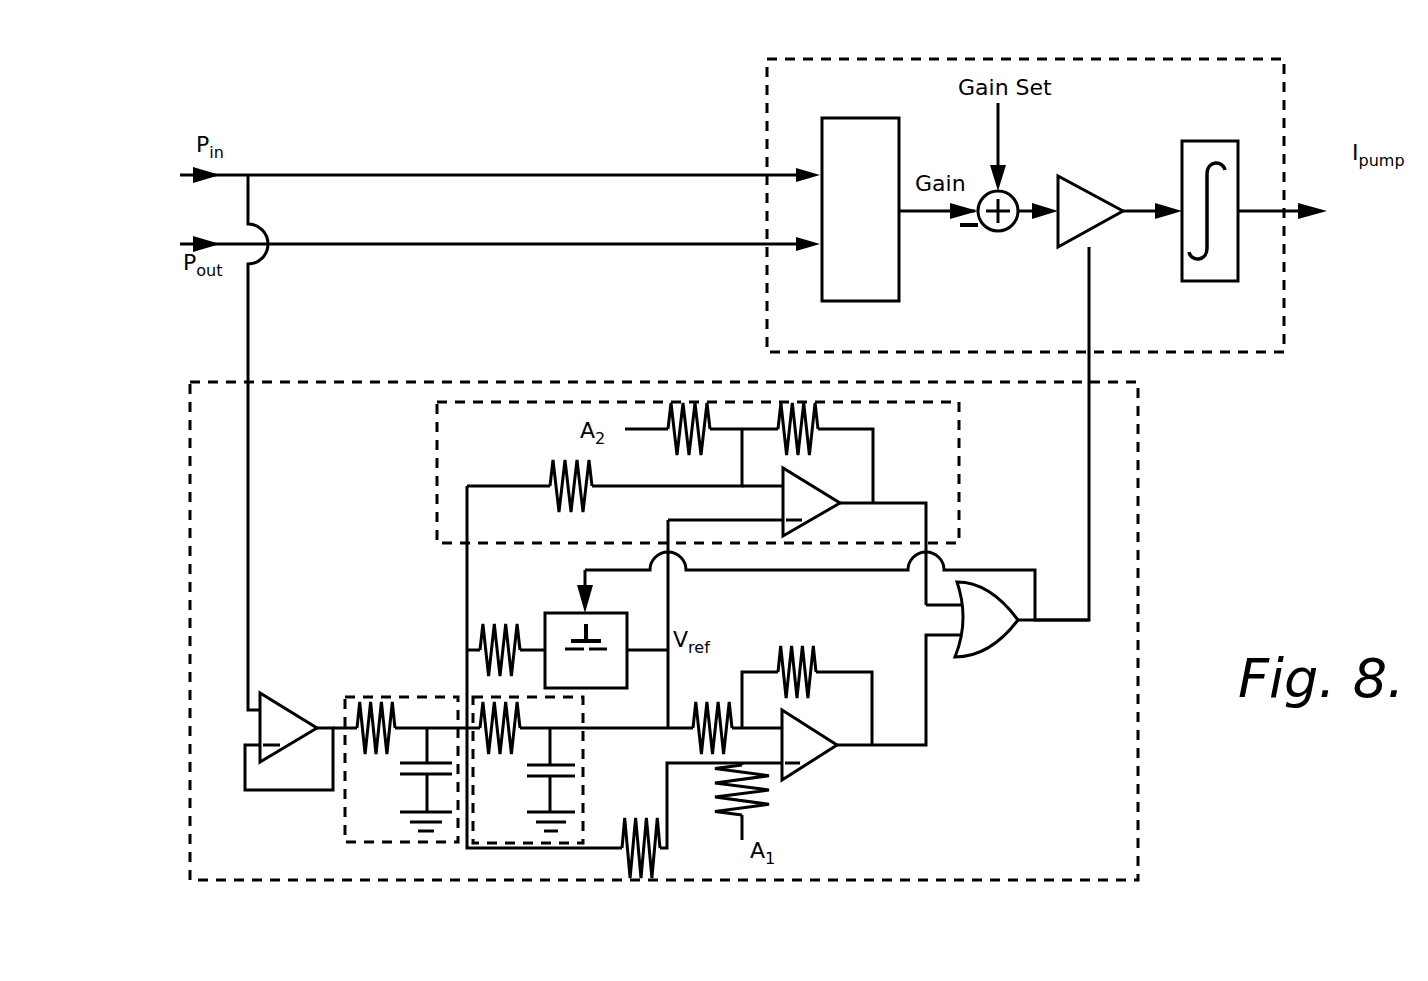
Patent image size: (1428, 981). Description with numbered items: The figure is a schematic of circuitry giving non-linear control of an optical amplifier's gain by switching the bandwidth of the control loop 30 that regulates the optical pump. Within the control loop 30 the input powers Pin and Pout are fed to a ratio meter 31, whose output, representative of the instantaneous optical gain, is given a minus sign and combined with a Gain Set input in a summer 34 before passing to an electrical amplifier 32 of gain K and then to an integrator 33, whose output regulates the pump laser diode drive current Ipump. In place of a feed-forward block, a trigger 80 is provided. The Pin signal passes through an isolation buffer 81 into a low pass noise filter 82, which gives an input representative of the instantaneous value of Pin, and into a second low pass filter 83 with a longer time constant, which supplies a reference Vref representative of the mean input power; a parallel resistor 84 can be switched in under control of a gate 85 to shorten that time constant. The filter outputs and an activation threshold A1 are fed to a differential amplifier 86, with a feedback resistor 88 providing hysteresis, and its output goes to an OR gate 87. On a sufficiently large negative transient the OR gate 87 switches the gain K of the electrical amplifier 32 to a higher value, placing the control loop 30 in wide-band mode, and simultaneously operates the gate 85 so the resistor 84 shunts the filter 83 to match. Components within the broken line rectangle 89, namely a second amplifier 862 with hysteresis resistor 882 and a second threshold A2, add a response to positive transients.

The control loop 30 is at (1285, 268).
The ratio meter 31 is at (876, 148).
The electrical amplifier 32 is at (1088, 203).
The integrator 33 is at (1216, 150).
The summer 34 is at (1003, 219).
The trigger 80 is at (1140, 540).
The isolation buffer 81 is at (283, 724).
The low pass noise filter 82 is at (403, 693).
The second low pass filter 83 is at (585, 787).
The parallel resistor 84 is at (500, 632).
The gate 85 is at (603, 676).
The differential amplifier 86 is at (810, 750).
The second amplifier 862 is at (808, 502).
The OR gate 87 is at (985, 630).
The feedback resistor 88 is at (813, 658).
The hysteresis resistor 882 is at (780, 423).
The positive transient components 89 is at (435, 472).